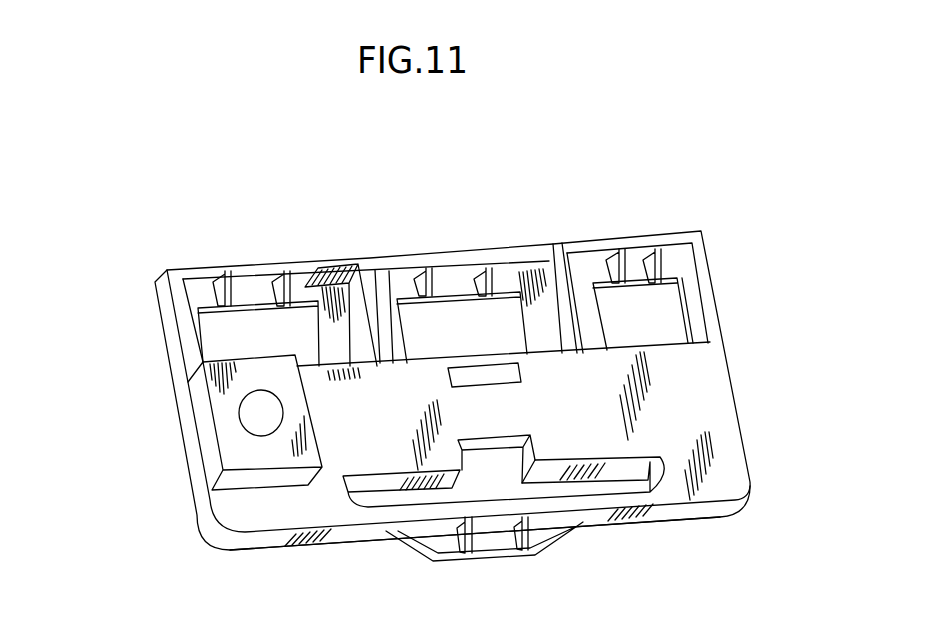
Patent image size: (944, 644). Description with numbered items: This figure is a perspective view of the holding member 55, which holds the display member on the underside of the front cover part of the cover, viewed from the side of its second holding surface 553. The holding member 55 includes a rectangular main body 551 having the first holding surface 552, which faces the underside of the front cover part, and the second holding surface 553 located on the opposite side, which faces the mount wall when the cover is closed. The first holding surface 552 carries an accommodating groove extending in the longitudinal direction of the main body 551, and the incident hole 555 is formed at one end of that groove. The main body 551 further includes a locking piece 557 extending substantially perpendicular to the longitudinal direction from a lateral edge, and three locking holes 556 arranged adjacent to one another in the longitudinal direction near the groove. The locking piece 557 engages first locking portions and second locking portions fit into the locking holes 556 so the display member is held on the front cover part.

The holding member 55 is at (422, 203).
The main body 551 is at (161, 316).
The first holding surface 552 is at (337, 545).
The second holding surface 553 is at (260, 511).
The incident hole 555 is at (262, 410).
The locking holes 556 is at (259, 307).
The locking piece 557 is at (500, 553).